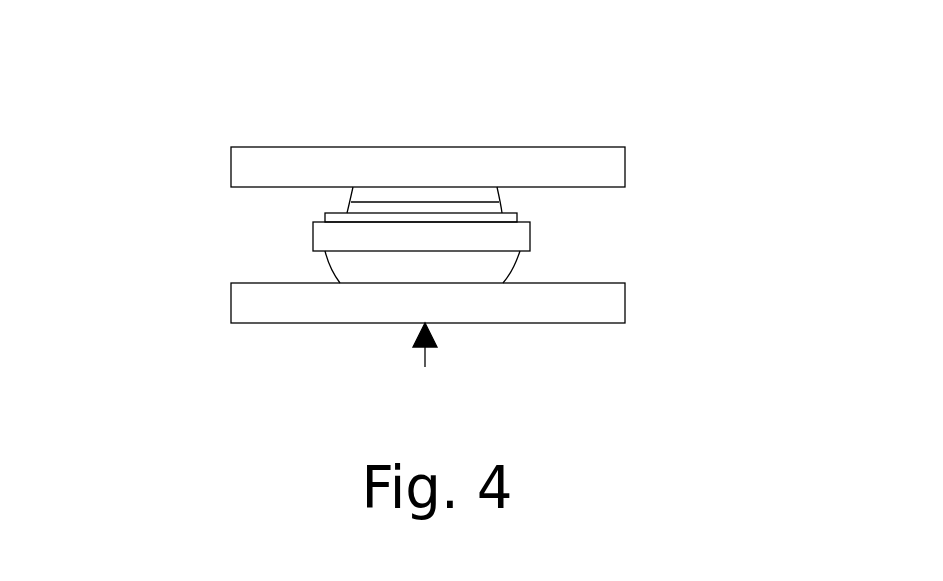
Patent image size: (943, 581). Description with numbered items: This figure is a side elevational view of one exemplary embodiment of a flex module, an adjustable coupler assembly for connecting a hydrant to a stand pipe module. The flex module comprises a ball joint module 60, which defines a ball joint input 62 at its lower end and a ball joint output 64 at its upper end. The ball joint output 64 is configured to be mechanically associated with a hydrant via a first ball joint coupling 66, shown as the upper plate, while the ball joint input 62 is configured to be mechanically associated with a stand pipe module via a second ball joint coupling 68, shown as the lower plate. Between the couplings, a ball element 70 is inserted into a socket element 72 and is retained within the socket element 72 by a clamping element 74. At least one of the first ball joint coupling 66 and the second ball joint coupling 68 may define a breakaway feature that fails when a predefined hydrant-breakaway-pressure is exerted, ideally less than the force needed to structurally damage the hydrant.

The ball joint module 60 is at (695, 199).
The ball joint input 62 is at (424, 379).
The ball joint output 64 is at (421, 40).
The first ball joint coupling 66 is at (231, 177).
The second ball joint coupling 68 is at (250, 301).
The ball element 70 is at (327, 216).
The socket element 72 is at (487, 268).
The clamping element 74 is at (313, 239).